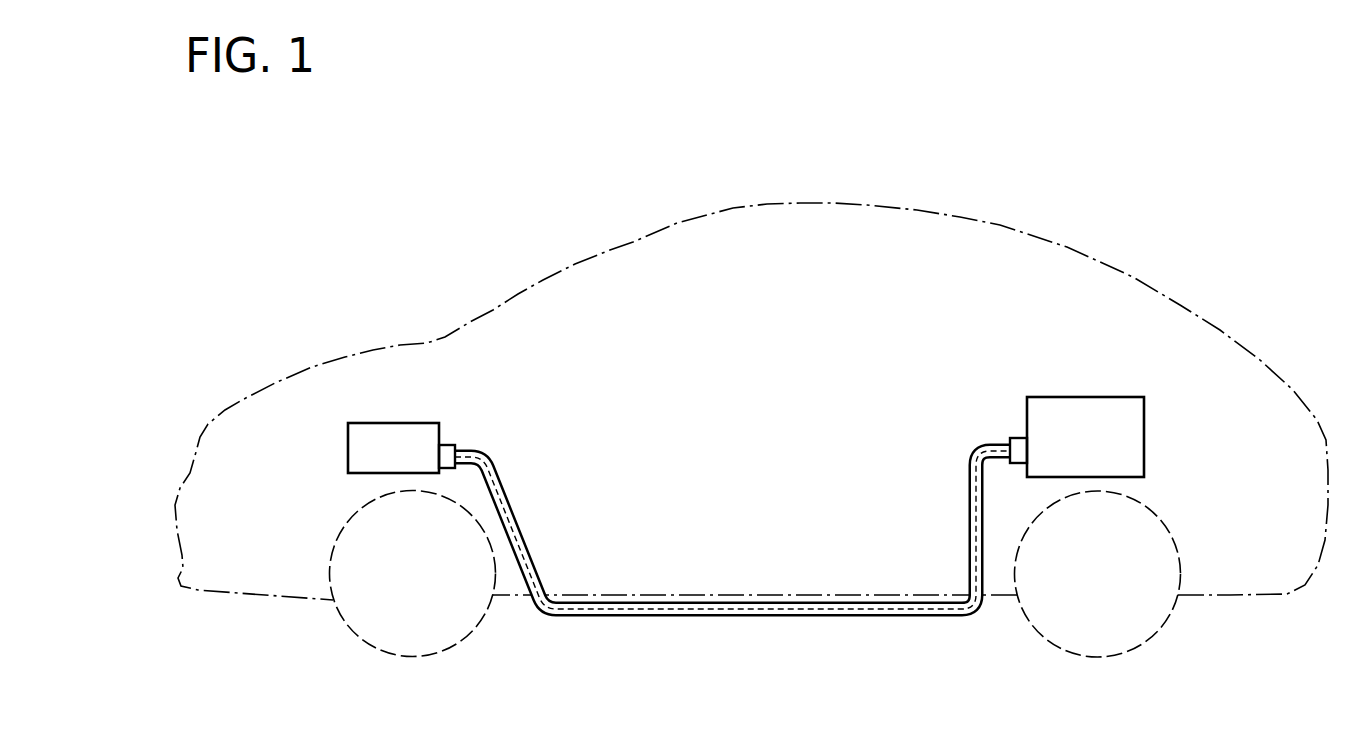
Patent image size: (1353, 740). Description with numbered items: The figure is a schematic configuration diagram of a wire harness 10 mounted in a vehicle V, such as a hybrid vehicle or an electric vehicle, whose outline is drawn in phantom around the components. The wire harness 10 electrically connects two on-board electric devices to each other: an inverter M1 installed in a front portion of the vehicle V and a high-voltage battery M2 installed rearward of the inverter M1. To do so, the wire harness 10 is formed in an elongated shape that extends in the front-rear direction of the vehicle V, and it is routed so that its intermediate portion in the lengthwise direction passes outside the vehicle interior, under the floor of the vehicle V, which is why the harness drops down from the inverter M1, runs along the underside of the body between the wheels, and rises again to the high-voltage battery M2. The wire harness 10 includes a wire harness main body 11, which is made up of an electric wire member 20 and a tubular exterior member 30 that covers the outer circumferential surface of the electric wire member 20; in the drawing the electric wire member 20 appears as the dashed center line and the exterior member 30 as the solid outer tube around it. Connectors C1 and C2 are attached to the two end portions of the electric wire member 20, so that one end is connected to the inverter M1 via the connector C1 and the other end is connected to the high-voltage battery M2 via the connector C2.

The vehicle V is at (1057, 243).
The wire harness 10 is at (733, 464).
The wire harness main body 11 is at (732, 530).
The electric wire member 20 is at (973, 497).
The exterior member 30 is at (968, 530).
The inverter M1 is at (398, 423).
The high-voltage battery M2 is at (1114, 397).
The connector C1 is at (446, 445).
The connector C2 is at (1016, 438).